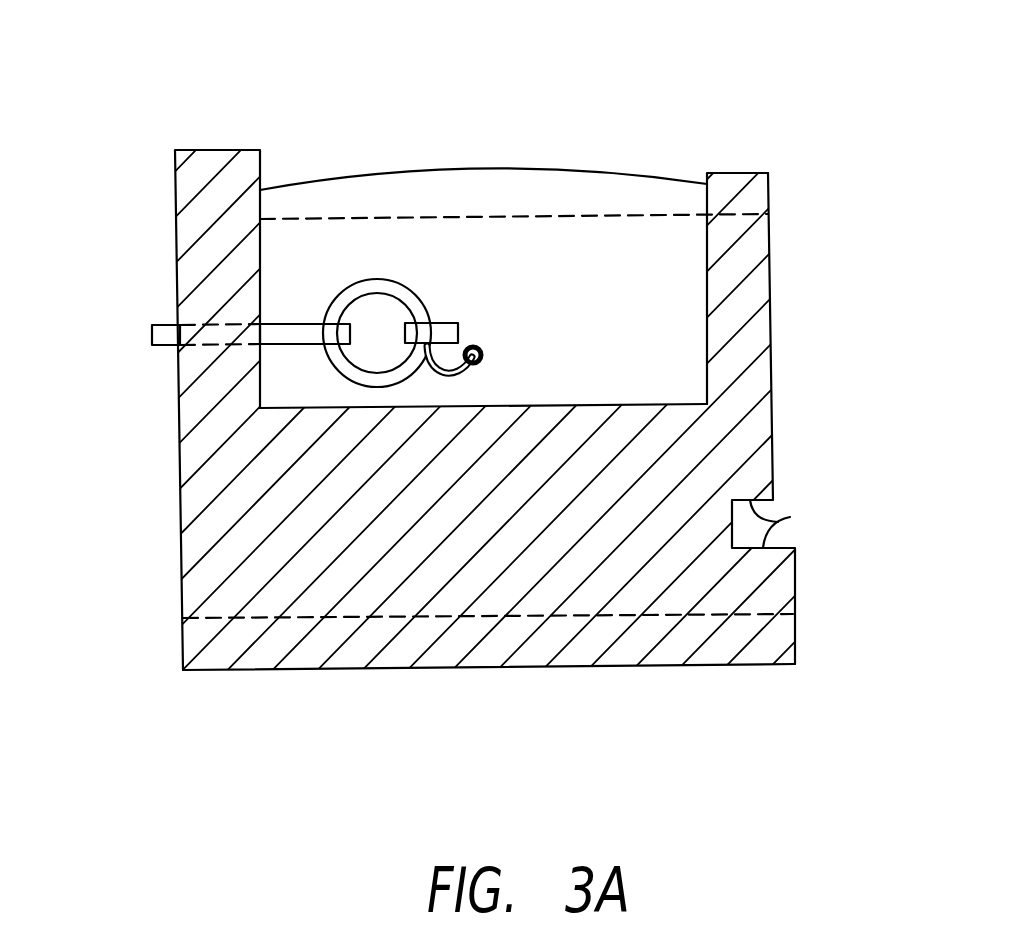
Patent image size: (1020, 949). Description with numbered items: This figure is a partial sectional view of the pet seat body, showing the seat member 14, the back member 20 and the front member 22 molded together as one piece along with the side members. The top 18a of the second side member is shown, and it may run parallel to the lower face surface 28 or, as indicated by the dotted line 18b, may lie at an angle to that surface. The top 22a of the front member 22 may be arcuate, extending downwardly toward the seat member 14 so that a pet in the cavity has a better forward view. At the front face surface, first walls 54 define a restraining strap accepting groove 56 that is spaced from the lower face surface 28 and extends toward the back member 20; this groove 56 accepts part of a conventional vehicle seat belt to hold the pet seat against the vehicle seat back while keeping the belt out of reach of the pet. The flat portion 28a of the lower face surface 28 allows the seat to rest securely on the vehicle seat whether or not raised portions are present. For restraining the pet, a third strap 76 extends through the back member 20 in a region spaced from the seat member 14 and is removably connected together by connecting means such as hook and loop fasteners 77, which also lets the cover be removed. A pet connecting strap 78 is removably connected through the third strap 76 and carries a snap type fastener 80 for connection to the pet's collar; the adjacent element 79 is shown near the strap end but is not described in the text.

The seat member 14 is at (587, 406).
The top of second side 18a is at (520, 165).
The dotted line 18b is at (607, 215).
The back member 20 is at (182, 508).
The front member 22 is at (773, 370).
The top of front member 22a is at (752, 222).
The lower face surface 28 is at (337, 670).
The flat portion 28a is at (498, 648).
The first walls 54 is at (732, 528).
The restraining strap accepting groove 56 is at (742, 514).
The third strap 76 is at (289, 323).
The hook and loop connecting means 77 is at (150, 333).
The pet connecting strap 78 is at (383, 281).
The rod end segment 79 is at (460, 333).
The snap type fastener 80 is at (483, 361).